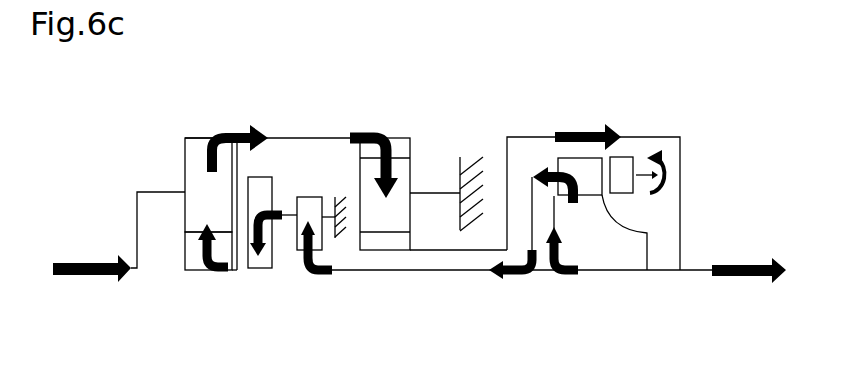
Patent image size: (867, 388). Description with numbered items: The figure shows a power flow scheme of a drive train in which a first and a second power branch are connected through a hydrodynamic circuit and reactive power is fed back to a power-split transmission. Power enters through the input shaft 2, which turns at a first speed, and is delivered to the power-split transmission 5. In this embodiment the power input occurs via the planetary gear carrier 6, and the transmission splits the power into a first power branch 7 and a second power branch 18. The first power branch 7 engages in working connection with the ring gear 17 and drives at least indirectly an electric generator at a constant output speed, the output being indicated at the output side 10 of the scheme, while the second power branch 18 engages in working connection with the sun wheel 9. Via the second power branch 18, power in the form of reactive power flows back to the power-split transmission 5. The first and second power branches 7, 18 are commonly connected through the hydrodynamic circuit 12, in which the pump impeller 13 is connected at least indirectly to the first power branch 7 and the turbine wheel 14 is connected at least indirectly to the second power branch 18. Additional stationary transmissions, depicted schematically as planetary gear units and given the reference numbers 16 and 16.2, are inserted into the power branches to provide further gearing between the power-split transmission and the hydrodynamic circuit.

The input shaft 2 is at (128, 271).
The power-split transmission 5 is at (240, 357).
The planetary gear carrier 6 is at (220, 210).
The first power branch 7 is at (575, 130).
The sun wheel 9 is at (192, 272).
The output shaft 10 is at (718, 277).
The hydrodynamic circuit 12 is at (615, 108).
The pump impeller 13 is at (618, 253).
The turbine wheel 14 is at (558, 158).
The additional transmission 16 is at (297, 310).
The additional transmission 16.2 is at (460, 132).
The ring gear 17 is at (203, 141).
The second power branch 18 is at (503, 275).